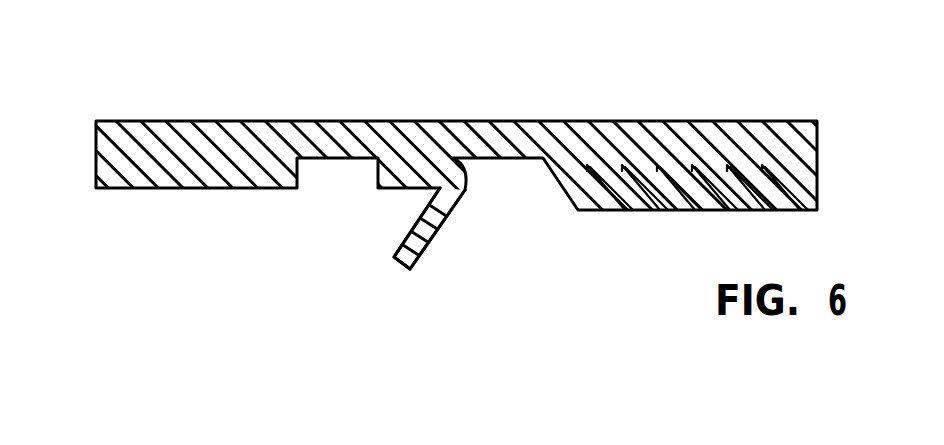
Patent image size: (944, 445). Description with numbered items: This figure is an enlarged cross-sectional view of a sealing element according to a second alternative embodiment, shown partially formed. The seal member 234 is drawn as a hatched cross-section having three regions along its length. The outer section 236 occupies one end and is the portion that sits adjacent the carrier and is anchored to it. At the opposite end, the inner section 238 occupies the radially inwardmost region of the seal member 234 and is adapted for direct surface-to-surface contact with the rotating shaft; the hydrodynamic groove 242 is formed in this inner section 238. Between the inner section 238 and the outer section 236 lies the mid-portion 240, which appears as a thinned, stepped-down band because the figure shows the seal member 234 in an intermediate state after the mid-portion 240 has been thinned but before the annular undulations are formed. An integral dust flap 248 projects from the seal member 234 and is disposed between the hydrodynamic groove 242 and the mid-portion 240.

The seal member 234 is at (95, 187).
The outer section 236 is at (96, 118).
The inner section 238 is at (817, 118).
The mid-portion 240 is at (380, 118).
The hydrodynamic groove 242 is at (725, 212).
The dust flap 248 is at (428, 252).